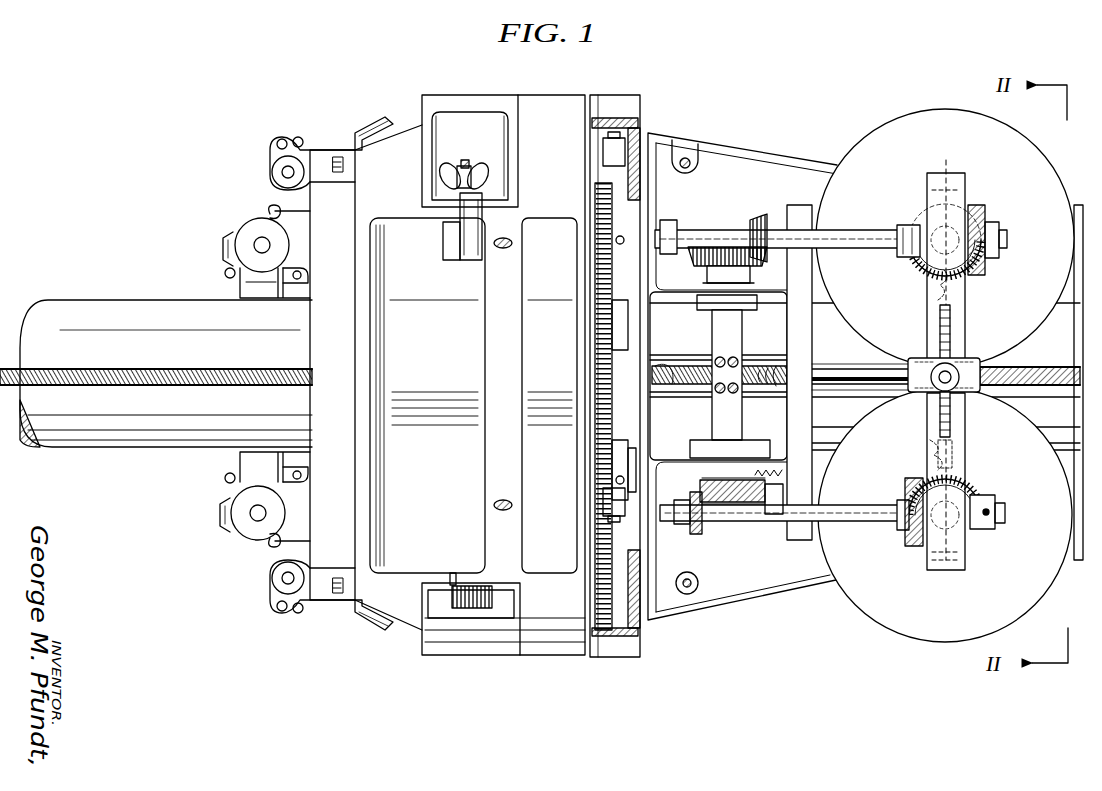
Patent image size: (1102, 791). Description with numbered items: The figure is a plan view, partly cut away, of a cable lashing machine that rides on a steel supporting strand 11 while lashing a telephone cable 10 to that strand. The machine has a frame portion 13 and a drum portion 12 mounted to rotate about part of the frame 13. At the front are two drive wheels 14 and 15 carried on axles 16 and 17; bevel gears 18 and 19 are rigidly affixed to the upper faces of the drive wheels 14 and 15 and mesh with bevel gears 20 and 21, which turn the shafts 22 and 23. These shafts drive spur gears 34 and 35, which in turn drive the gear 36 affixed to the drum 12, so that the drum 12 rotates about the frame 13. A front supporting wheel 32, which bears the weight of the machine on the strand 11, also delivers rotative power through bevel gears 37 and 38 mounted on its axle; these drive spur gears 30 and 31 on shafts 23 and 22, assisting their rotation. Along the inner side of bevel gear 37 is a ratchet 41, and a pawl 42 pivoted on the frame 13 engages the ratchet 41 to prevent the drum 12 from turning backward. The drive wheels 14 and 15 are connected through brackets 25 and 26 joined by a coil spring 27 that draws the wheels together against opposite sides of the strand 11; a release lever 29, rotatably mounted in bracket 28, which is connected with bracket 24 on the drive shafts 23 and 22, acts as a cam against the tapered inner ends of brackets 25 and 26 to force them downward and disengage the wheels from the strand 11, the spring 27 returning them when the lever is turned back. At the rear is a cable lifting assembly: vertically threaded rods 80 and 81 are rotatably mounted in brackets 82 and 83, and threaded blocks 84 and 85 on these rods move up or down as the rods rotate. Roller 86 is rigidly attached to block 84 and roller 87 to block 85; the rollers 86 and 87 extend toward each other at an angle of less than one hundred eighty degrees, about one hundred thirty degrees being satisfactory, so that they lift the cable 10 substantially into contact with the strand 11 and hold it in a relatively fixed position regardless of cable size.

The telephone cable 10 is at (90, 312).
The supporting strand 11 is at (150, 384).
The drum portion 12 is at (603, 90).
The frame portion 13 is at (346, 627).
The front drive wheel 14 is at (906, 626).
The front drive wheel 15 is at (896, 136).
The axle 16 is at (948, 572).
The axle 17 is at (949, 248).
The bevel gear 18 is at (970, 532).
The bevel gear 19 is at (972, 268).
The bevel gear 20 is at (908, 545).
The bevel gear 21 is at (978, 210).
The shaft 22 is at (858, 510).
The shaft 23 is at (861, 240).
The bracket 24 is at (800, 410).
The bracket 25 is at (960, 462).
The bracket 26 is at (963, 304).
The coil spring 27 is at (930, 438).
The bracket 28 is at (855, 374).
The release lever 29 is at (980, 382).
The spur gear 30 is at (696, 528).
The spur gear 31 is at (758, 220).
The front supporting wheel 32 is at (690, 372).
The spur gear 34 is at (598, 595).
The spur gear 35 is at (598, 178).
The gear 36 is at (600, 345).
The bevel gear 37 is at (744, 503).
The bevel gear 38 is at (716, 246).
The ratchet 41 is at (776, 500).
The pawl 42 is at (600, 478).
The threaded rod 80 is at (262, 245).
The threaded rod 81 is at (258, 513).
The bracket 82 is at (297, 214).
The bracket 83 is at (295, 540).
The threaded block 84 is at (225, 272).
The threaded block 85 is at (225, 478).
The roller 86 is at (245, 292).
The roller 87 is at (240, 462).